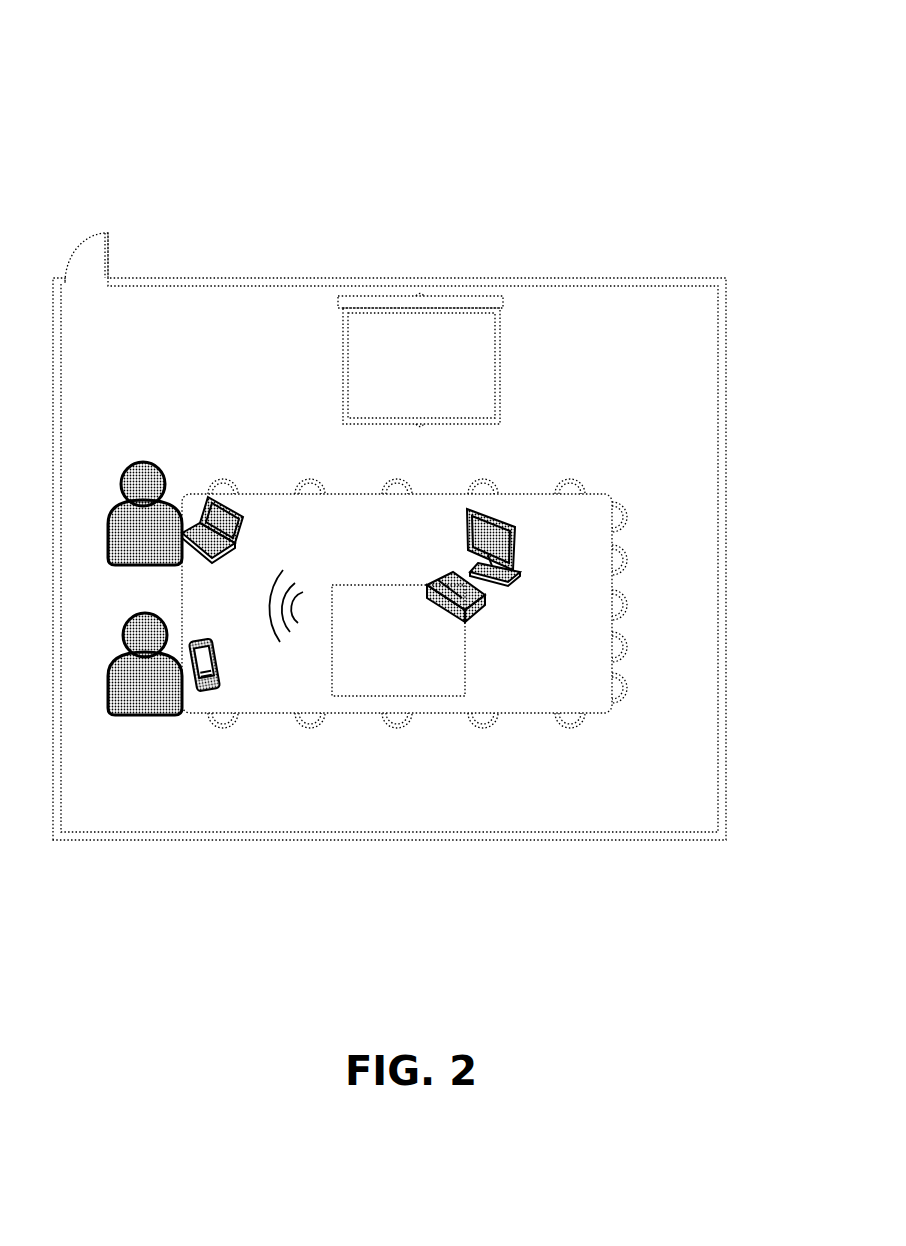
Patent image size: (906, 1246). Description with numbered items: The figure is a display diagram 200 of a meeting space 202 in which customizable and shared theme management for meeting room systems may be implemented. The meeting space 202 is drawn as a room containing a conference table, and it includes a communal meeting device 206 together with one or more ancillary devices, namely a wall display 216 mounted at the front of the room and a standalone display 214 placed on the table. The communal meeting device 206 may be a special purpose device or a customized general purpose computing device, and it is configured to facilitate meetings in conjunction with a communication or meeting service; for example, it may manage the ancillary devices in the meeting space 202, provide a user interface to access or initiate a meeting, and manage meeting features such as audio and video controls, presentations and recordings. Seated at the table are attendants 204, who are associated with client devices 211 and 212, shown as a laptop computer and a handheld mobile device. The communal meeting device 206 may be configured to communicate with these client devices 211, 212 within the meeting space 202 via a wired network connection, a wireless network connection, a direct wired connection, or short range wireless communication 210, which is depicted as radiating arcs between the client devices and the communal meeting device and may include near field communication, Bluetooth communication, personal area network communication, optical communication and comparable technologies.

The diagram 200 is at (690, 58).
The meeting space 202 is at (630, 251).
The attendants 204 is at (104, 545).
The communal meeting device 206 is at (423, 578).
The short range wireless communication 210 is at (262, 605).
The client device 211 is at (241, 553).
The client device 212 is at (229, 671).
The standalone display 214 is at (519, 525).
The wall display 216 is at (460, 438).